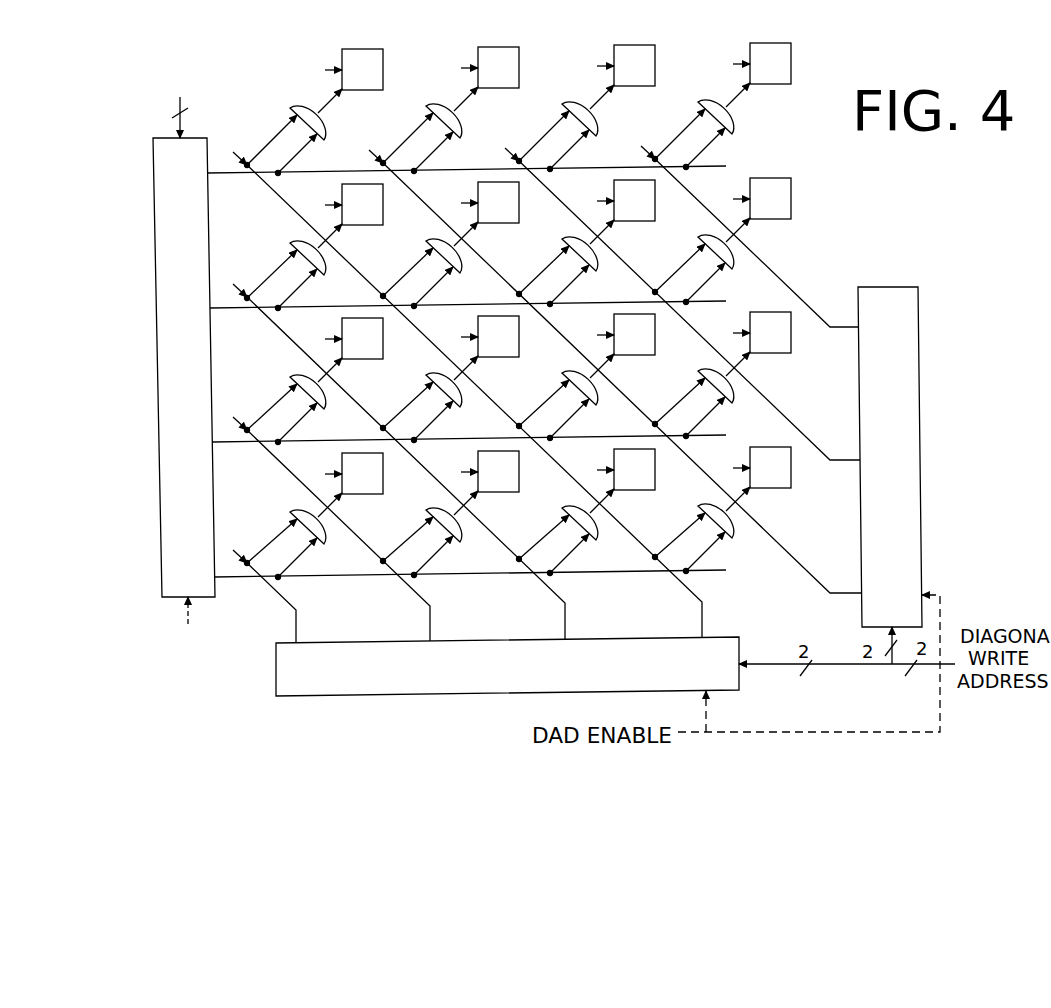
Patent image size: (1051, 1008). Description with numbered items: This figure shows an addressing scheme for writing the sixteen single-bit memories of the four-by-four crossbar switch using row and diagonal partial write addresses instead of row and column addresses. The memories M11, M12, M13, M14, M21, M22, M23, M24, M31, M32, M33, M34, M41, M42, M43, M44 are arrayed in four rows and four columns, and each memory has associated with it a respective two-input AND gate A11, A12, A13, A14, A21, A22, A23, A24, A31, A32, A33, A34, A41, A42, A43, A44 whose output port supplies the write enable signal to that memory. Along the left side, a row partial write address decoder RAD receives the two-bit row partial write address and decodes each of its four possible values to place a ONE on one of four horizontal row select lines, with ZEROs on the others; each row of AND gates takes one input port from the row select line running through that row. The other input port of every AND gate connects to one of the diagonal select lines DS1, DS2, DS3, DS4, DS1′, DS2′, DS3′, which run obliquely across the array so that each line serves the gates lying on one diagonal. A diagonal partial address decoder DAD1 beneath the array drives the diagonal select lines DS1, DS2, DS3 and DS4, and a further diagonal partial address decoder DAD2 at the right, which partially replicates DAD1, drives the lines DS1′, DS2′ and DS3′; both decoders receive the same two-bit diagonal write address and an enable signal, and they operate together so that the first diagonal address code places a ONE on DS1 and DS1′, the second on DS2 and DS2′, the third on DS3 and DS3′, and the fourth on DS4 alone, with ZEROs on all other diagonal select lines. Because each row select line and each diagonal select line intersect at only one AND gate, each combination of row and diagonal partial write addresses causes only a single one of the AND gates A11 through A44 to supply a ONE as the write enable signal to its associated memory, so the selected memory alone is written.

The memory M11 is at (342, 69).
The memory M12 is at (478, 67).
The memory M13 is at (614, 65).
The memory M14 is at (750, 63).
The memory M21 is at (342, 204).
The memory M22 is at (478, 202).
The memory M23 is at (614, 200).
The memory M24 is at (750, 198).
The memory M31 is at (342, 338).
The memory M32 is at (478, 336).
The memory M33 is at (614, 334).
The memory M34 is at (750, 332).
The memory M41 is at (342, 473).
The memory M42 is at (478, 471).
The memory M43 is at (614, 469).
The memory M44 is at (750, 467).
The AND gate A11 is at (304, 132).
The AND gate A12 is at (440, 130).
The AND gate A13 is at (576, 128).
The AND gate A14 is at (712, 126).
The AND gate A21 is at (304, 267).
The AND gate A22 is at (440, 265).
The AND gate A23 is at (576, 263).
The AND gate A24 is at (712, 261).
The AND gate A31 is at (304, 401).
The AND gate A32 is at (440, 399).
The AND gate A33 is at (576, 397).
The AND gate A34 is at (712, 395).
The AND gate A41 is at (304, 536).
The AND gate A42 is at (440, 534).
The AND gate A43 is at (576, 532).
The AND gate A44 is at (712, 530).
The diagonal select line DS1 is at (289, 607).
The diagonal select line DS2 is at (423, 603).
The diagonal select line DS3 is at (558, 600).
The diagonal select line DS4 is at (695, 599).
The diagonal select line DS1′ is at (800, 559).
The diagonal select line DS2′ is at (803, 427).
The diagonal select line DS3′ is at (808, 293).
The row partial write address decoder RAD is at (159, 430).
The diagonal partial address decoder DAD1 is at (276, 673).
The further diagonal partial address decoder DAD2 is at (890, 287).